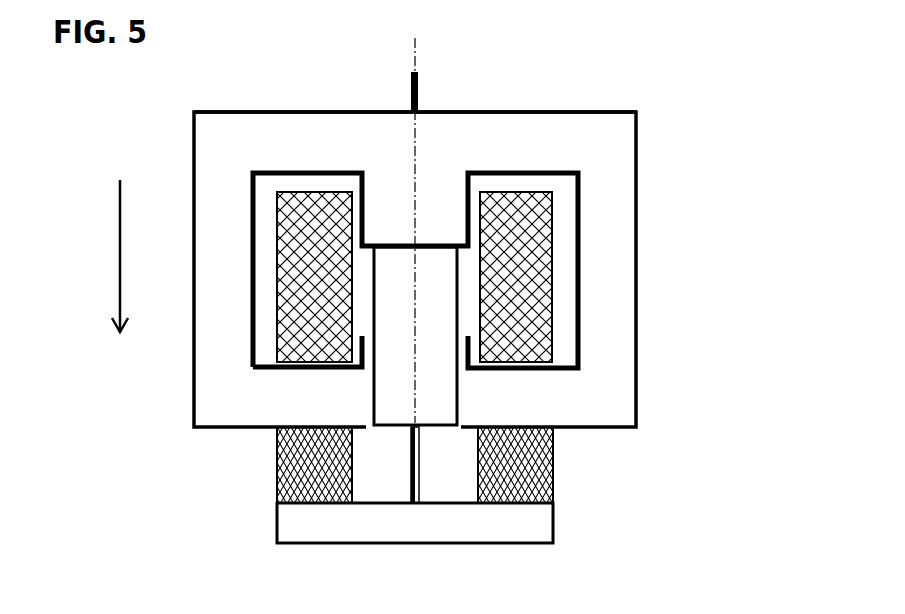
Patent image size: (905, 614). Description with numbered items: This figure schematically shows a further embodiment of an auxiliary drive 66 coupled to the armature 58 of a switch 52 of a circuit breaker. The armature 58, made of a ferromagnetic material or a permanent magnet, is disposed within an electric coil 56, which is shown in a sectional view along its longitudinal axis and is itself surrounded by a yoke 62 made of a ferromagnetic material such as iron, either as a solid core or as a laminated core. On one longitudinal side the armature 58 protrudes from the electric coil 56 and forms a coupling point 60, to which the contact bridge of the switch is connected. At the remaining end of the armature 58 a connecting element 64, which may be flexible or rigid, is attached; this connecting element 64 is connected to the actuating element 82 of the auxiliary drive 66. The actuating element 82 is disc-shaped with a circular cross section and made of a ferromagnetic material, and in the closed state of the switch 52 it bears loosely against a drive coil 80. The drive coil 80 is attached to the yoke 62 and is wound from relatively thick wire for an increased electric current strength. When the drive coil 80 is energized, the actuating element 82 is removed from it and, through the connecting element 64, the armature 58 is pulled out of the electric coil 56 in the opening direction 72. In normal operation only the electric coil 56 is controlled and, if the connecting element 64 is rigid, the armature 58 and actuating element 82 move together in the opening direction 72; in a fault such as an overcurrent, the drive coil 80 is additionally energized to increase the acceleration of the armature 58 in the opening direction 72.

The switch 52 is at (693, 120).
The electric coil 56 is at (527, 275).
The armature 58 is at (428, 393).
The coupling point 60 is at (419, 110).
The yoke 62 is at (338, 111).
The connecting element 64 is at (411, 478).
The auxiliary drive 66 is at (452, 515).
The opening direction 72 is at (120, 258).
The drive coil 80 is at (293, 465).
The actuating element 82 is at (497, 528).